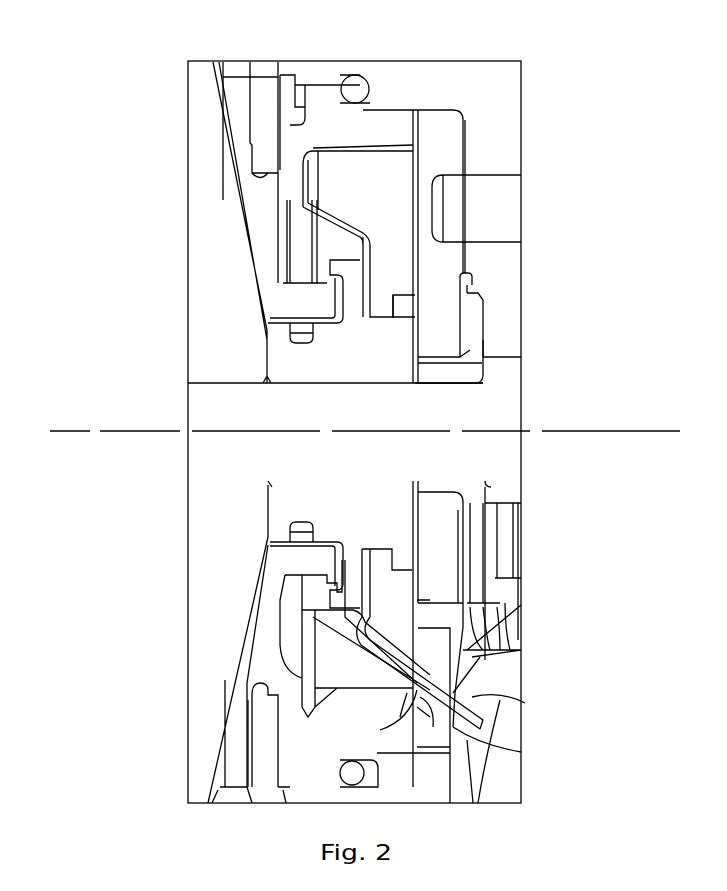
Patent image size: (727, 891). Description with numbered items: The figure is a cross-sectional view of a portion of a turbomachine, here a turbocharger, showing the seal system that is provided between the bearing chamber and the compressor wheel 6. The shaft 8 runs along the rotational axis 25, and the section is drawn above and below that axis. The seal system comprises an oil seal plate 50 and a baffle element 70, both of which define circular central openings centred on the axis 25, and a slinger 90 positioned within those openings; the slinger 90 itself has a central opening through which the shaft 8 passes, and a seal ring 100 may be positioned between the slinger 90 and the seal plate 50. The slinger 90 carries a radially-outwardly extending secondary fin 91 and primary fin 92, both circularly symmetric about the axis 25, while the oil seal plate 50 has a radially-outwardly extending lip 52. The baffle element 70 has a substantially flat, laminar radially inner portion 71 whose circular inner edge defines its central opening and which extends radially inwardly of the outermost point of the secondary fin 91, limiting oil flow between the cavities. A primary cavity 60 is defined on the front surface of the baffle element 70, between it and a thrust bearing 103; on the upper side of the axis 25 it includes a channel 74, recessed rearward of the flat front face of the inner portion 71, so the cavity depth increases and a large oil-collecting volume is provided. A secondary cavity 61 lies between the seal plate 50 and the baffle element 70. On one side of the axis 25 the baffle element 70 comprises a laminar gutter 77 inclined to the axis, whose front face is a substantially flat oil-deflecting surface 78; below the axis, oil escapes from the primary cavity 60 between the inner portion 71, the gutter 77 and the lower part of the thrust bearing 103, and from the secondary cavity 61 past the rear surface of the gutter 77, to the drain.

The compressor wheel 6 is at (205, 327).
The shaft 8 is at (500, 417).
The rotational axis 25 is at (112, 431).
The oil seal plate 50 is at (333, 127).
The radially-outwardly extending lip 52 is at (283, 277).
The primary cavity 60 is at (352, 200).
The secondary cavity 61 is at (372, 262).
The baffle element 70 is at (372, 262).
The radially inner portion 71 is at (373, 255).
The channel 74 is at (330, 177).
The laminar gutter 77 is at (440, 737).
The oil-deflecting surface 78 is at (465, 705).
The slinger 90 is at (373, 353).
The secondary fin 91 is at (352, 292).
The primary fin 92 is at (400, 300).
The seal ring 100 is at (290, 533).
The thrust bearing 103 is at (438, 257).